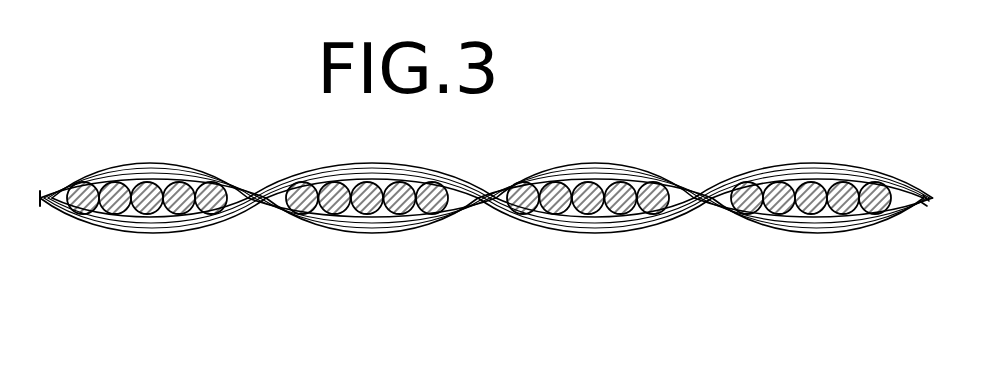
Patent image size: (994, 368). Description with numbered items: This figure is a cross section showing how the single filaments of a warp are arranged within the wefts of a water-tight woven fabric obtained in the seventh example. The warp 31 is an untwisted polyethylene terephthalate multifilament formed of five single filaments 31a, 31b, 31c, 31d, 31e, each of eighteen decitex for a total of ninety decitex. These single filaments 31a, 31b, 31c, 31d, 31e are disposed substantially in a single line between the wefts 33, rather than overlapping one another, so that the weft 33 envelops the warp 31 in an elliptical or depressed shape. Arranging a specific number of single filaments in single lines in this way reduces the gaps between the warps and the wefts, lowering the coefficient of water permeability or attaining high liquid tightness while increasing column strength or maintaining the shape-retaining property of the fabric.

The warp 31 is at (257, 300).
The single filament 31a is at (83, 214).
The single filament 31b is at (115, 214).
The single filament 31c is at (147, 214).
The single filament 31d is at (179, 214).
The single filament 31e is at (211, 214).
The weft 33 is at (367, 166).